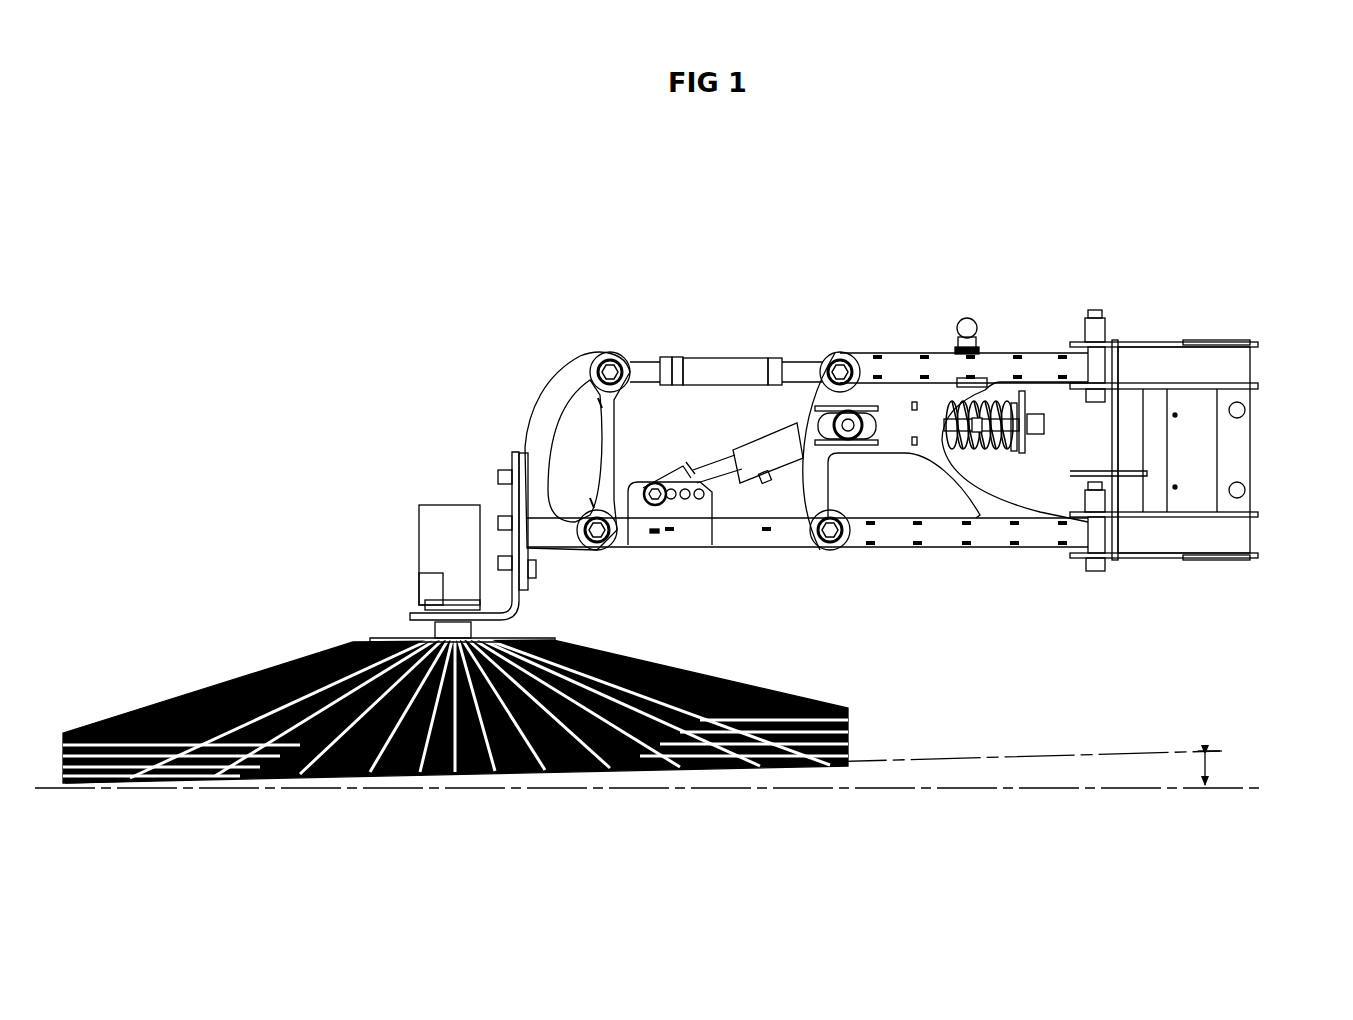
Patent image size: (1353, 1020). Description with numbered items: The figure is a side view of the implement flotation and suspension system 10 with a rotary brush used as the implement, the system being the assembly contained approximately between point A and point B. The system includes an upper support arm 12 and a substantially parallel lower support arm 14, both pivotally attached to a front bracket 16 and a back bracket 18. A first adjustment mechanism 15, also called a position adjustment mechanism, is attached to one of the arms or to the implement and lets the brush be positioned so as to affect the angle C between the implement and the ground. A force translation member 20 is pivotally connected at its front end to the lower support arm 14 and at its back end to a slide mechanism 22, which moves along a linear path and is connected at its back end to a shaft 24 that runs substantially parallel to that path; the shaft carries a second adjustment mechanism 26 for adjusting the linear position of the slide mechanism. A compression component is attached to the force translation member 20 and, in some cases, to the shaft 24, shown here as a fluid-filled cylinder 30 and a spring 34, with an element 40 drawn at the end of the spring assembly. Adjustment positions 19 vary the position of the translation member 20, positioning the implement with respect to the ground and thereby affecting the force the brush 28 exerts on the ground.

The implement flotation and suspension system 10 is at (866, 287).
The upper support arm 12 is at (649, 348).
The lower support arm 14 is at (761, 546).
The first adjustment mechanism 15 is at (731, 348).
The front bracket 16 is at (551, 350).
The back bracket 18 is at (909, 349).
The adjustment positions 19 is at (660, 502).
The force translation member 20 is at (711, 468).
The slide mechanism 22 is at (856, 441).
The shaft 24 is at (974, 452).
The second adjustment mechanism 26 is at (1026, 446).
The brush 28 is at (207, 690).
The fluid-filled cylinder 30 is at (767, 441).
The spring 34 is at (987, 456).
The adjustment nut 40 is at (1018, 457).
The point A is at (506, 497).
The point B is at (1106, 328).
The angle C is at (1214, 769).